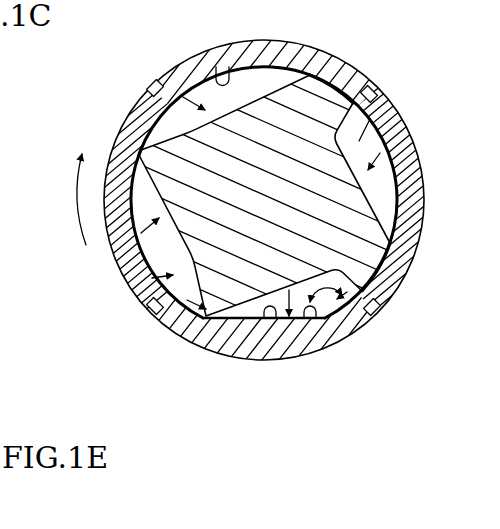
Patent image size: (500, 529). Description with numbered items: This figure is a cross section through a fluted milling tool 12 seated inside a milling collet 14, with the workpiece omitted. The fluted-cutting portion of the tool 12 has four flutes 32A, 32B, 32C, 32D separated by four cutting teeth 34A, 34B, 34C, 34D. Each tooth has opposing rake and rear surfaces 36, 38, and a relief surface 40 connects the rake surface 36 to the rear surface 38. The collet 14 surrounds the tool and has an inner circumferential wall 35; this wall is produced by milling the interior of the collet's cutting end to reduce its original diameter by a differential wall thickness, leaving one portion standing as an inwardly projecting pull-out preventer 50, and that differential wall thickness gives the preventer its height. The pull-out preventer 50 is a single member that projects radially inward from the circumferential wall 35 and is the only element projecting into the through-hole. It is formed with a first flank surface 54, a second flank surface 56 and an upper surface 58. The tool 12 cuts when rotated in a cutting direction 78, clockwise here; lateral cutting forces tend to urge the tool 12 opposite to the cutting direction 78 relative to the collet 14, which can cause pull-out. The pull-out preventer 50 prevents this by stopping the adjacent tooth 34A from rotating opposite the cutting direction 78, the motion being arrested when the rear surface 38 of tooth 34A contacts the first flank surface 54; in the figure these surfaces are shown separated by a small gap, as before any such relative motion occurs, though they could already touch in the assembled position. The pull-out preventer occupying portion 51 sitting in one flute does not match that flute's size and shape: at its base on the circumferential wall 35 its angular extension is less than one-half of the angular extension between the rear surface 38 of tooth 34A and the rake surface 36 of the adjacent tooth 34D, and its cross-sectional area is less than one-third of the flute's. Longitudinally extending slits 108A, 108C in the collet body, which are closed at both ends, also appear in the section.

The tool 12 is at (412, 137).
The milling collet 14 is at (410, 203).
The flute 32A is at (358, 320).
The flute 32B is at (115, 252).
The flute 32C is at (158, 84).
The flute 32D is at (375, 97).
The cutting tooth 34A is at (217, 321).
The cutting tooth 34B is at (157, 147).
The cutting tooth 34C is at (327, 97).
The cutting tooth 34D is at (376, 250).
The circumferential wall 35 is at (222, 67).
The rake surface 36 is at (138, 273).
The rear surface 38 is at (224, 321).
The relief surface 40 is at (172, 327).
The pull-out preventer 50 is at (330, 308).
The pull-out preventer occupying portion 51 is at (251, 323).
The first flank surface 54 is at (225, 318).
The second flank surface 56 is at (311, 327).
The upper surface 58 is at (268, 320).
The cutting direction 78 is at (78, 200).
The slit 108A is at (150, 312).
The slit 108C is at (374, 310).